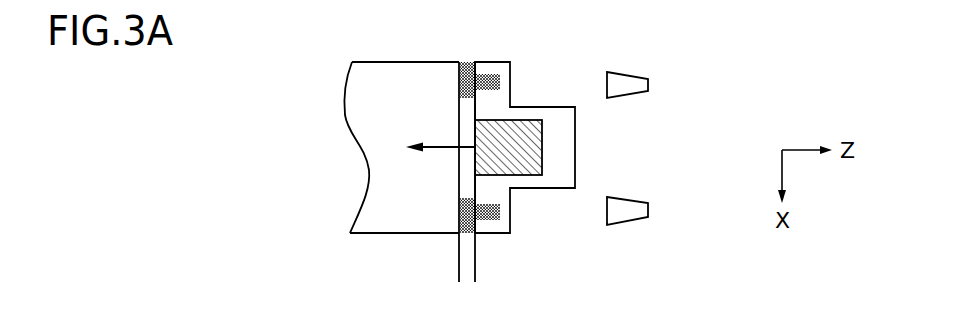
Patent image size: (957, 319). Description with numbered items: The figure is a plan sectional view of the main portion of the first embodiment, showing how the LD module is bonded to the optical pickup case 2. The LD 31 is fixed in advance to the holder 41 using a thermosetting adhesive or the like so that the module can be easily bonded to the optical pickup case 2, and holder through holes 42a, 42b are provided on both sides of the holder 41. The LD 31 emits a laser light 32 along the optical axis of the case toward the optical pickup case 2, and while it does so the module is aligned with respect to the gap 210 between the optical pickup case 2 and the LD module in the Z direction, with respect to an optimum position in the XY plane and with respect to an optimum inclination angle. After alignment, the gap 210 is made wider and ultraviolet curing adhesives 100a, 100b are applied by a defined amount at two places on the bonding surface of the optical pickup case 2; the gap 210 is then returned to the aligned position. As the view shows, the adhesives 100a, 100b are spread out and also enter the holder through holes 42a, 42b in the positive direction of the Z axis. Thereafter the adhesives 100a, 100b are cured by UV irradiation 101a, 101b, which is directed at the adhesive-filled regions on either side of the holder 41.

The optical pickup case 2 is at (371, 180).
The ultraviolet curing adhesive 100a is at (459, 84).
The ultraviolet curing adhesive 100b is at (459, 212).
The gap 210 is at (417, 273).
The holder 41 is at (575, 120).
The LD 31 is at (542, 163).
The holder through hole 42a is at (502, 83).
The holder through hole 42b is at (500, 212).
The laser light 32 is at (423, 149).
The UV irradiation 101a is at (648, 85).
The UV irradiation 101b is at (648, 212).